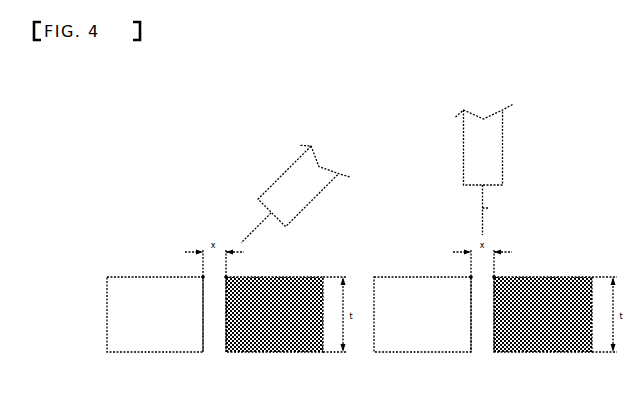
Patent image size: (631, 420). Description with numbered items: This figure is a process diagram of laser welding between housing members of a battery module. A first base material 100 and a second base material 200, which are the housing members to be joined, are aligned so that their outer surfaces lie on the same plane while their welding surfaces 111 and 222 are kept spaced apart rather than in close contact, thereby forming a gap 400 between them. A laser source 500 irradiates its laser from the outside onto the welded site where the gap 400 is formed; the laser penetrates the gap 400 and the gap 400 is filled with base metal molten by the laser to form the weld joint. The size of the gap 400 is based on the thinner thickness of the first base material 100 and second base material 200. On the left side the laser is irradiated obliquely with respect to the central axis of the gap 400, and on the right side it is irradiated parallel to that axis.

The first base material 100 is at (422, 362).
The second base material 200 is at (545, 362).
The welding surface 111 is at (471, 355).
The welding surface 222 is at (494, 355).
The gap 400 is at (476, 272).
The nozzle 500 is at (511, 152).